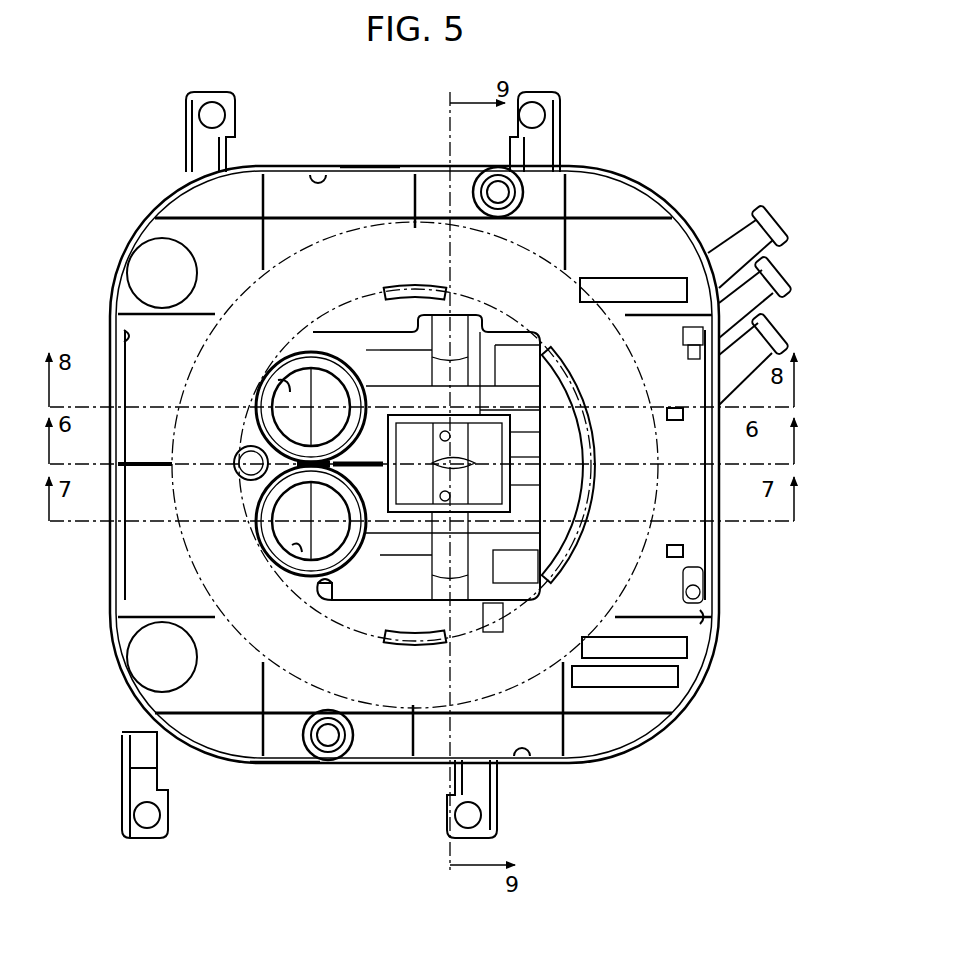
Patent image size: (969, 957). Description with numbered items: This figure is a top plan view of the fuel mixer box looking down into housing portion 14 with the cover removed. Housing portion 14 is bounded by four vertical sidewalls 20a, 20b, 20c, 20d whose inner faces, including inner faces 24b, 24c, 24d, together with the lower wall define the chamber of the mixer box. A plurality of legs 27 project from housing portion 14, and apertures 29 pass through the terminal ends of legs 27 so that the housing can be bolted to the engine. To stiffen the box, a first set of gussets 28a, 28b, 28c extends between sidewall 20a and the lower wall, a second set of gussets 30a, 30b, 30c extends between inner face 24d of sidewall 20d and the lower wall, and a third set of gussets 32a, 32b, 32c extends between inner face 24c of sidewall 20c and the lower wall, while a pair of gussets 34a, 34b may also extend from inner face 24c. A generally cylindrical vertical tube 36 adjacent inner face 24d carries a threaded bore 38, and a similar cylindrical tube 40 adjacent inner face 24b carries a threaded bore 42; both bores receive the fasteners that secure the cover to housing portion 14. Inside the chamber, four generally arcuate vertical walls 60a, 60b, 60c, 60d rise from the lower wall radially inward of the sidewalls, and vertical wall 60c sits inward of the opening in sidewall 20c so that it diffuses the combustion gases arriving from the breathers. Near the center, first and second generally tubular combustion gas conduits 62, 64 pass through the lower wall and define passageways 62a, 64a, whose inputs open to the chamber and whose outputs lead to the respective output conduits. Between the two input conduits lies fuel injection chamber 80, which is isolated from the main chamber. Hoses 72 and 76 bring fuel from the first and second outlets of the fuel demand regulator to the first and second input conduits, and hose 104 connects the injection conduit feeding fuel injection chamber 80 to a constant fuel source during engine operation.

The housing portion 14 is at (112, 660).
The sidewall 20a is at (118, 625).
The sidewall 20b is at (280, 762).
The sidewall 20c is at (703, 582).
The sidewall 20d is at (362, 168).
The inner face 24b is at (522, 758).
The inner face 24c is at (704, 614).
The inner face 24d is at (318, 172).
The legs 27 is at (185, 97).
The apertures 29 is at (212, 112).
The gusset 28a is at (128, 602).
The gusset 28b is at (165, 470).
The gusset 28c is at (192, 318).
The gusset 30a is at (262, 238).
The gusset 30b is at (416, 182).
The gusset 30c is at (567, 252).
The gusset 32a is at (582, 756).
The gusset 32b is at (414, 758).
The gusset 32c is at (262, 756).
The gusset 34a is at (640, 330).
The gusset 34b is at (716, 634).
The vertical tube 36 is at (520, 190).
The threaded bore 38 is at (505, 215).
The cylindrical tube 40 is at (358, 738).
The threaded bore 42 is at (328, 746).
The vertical wall 60a is at (248, 481).
The vertical wall 60b is at (394, 645).
The vertical wall 60c is at (575, 374).
The vertical wall 60d is at (413, 285).
The first combustion gas conduit 62 is at (332, 588).
The passageway 62a is at (303, 552).
The second combustion gas conduit 64 is at (284, 352).
The passageway 64a is at (284, 384).
The hose 72 is at (772, 338).
The hose 76 is at (766, 240).
The fuel injection chamber 80 is at (420, 500).
The hose 104 is at (768, 284).